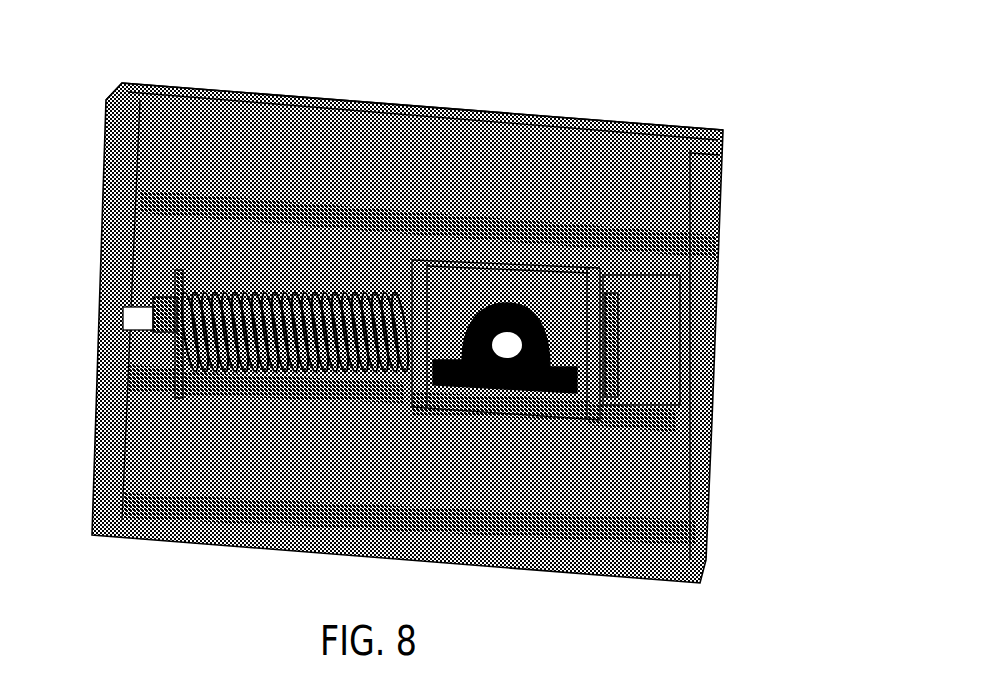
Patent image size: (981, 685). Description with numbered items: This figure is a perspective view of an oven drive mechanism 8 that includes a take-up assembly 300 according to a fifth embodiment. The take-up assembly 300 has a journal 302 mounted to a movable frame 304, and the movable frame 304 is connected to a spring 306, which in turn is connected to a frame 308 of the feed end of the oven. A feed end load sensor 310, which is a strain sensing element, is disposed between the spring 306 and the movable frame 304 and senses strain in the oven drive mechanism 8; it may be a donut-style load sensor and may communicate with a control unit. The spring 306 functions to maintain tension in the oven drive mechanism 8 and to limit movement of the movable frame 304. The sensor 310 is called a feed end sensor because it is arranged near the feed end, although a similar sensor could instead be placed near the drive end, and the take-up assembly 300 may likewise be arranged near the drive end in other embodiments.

The oven drive mechanism 8 is at (745, 230).
The take-up assembly 300 is at (455, 333).
The journal 302 is at (522, 305).
The movable frame 304 is at (597, 318).
The spring 306 is at (97, 373).
The frame 308 is at (723, 177).
The feed end load sensor 310 is at (400, 300).